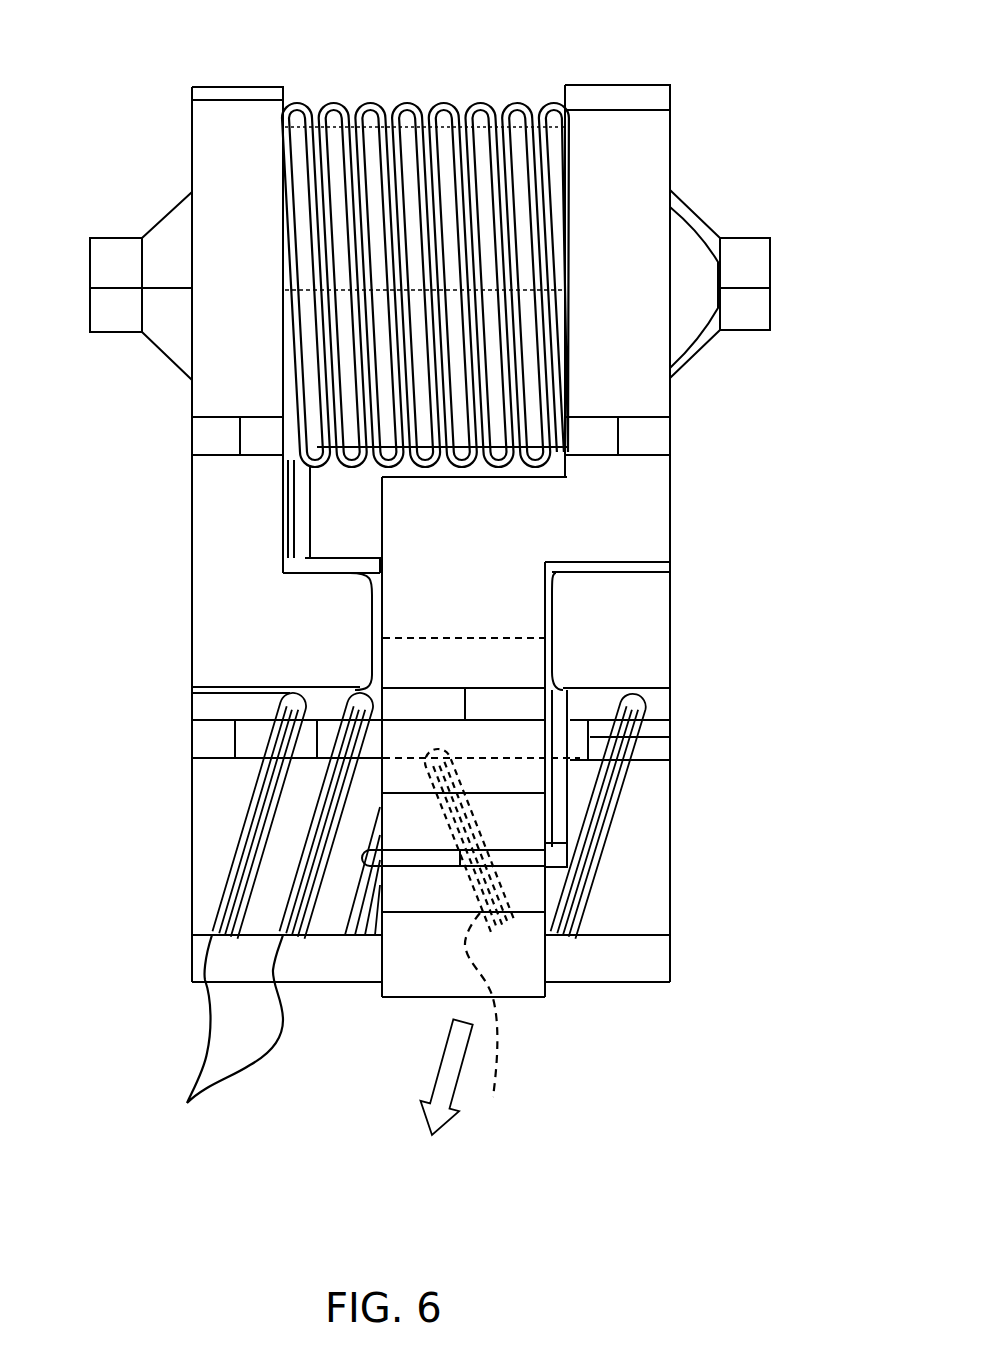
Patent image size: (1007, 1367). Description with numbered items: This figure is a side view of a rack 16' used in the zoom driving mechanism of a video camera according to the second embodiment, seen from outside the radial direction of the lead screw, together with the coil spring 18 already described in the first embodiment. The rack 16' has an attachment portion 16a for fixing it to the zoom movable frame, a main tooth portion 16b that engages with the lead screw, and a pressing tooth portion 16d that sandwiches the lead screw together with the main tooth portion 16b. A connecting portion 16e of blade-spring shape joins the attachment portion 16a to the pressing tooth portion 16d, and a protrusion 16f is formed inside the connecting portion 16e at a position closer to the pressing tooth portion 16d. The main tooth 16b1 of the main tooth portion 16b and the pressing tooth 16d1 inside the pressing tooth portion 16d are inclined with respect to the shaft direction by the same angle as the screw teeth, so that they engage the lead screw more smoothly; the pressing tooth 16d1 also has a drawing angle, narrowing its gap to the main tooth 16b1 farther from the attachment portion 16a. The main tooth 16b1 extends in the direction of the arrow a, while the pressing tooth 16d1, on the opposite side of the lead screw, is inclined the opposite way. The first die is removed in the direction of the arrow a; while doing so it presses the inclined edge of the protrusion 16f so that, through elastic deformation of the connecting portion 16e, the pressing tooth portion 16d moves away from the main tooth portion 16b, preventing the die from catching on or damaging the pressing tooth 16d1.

The rack 16' is at (431, 504).
The coil spring 18 is at (390, 240).
The attachment portion 16a is at (128, 262).
The main tooth portion 16b is at (232, 803).
The main tooth 16b1 is at (206, 1050).
The pressing tooth portion 16d is at (517, 965).
The pressing tooth 16d1 is at (511, 1035).
The connecting portion 16e is at (538, 607).
The protrusion 16f is at (500, 660).
The arrow a is at (430, 1117).